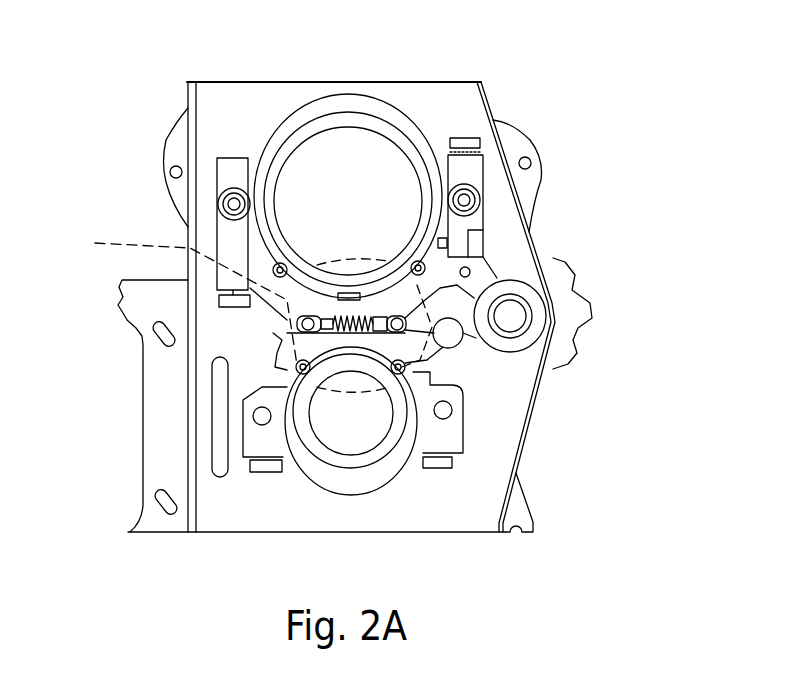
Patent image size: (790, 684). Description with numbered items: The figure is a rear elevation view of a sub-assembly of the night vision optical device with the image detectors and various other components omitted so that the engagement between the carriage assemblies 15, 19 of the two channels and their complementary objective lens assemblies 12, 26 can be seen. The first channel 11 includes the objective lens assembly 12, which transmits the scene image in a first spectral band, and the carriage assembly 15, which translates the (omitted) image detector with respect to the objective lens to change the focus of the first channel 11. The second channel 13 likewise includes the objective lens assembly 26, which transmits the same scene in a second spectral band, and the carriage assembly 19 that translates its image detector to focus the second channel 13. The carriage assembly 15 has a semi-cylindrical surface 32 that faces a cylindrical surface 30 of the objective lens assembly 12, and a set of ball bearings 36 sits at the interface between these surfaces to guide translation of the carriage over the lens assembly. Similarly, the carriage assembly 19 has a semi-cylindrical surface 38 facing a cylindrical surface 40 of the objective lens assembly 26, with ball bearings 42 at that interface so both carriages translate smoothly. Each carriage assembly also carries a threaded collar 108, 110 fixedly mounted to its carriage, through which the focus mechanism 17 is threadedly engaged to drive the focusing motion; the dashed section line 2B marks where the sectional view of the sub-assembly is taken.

The first channel 11 is at (466, 113).
The objective lens assembly 12 is at (378, 116).
The second channel 13 is at (435, 488).
The carriage assembly 15 is at (483, 218).
The focus mechanism 17 is at (541, 314).
The carriage assembly 19 is at (460, 435).
The objective lens assembly 26 is at (322, 467).
The cylindrical surface 30 is at (317, 117).
The semi-cylindrical surface 32 is at (243, 158).
The ball bearings 36 is at (276, 266).
The semi-cylindrical surface 38 is at (412, 440).
The cylindrical surface 40 is at (343, 470).
The ball bearings 42 is at (296, 368).
The threaded collar 108 is at (480, 272).
The threaded collar 110 is at (458, 349).
The section line 2B is at (245, 301).